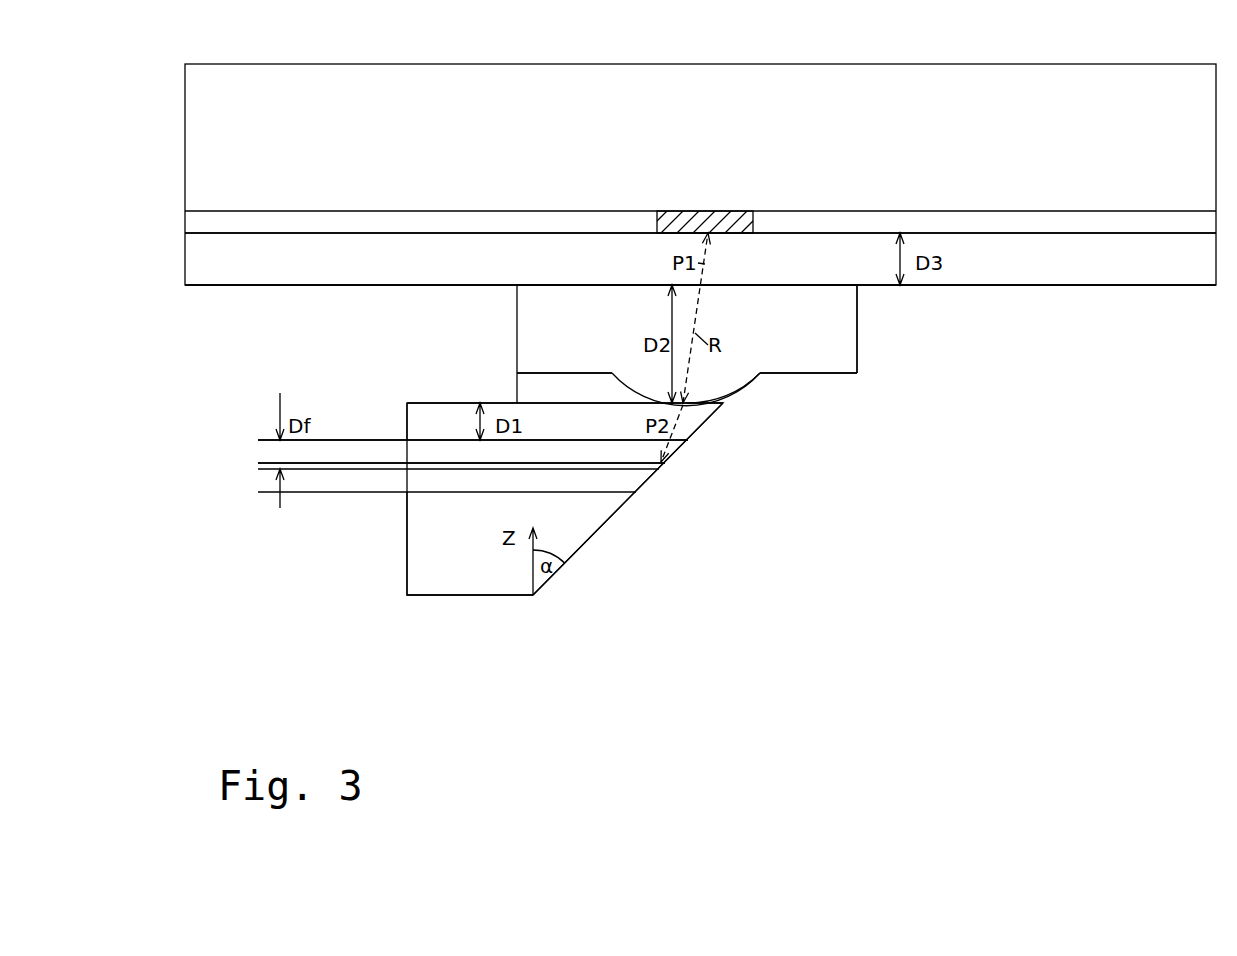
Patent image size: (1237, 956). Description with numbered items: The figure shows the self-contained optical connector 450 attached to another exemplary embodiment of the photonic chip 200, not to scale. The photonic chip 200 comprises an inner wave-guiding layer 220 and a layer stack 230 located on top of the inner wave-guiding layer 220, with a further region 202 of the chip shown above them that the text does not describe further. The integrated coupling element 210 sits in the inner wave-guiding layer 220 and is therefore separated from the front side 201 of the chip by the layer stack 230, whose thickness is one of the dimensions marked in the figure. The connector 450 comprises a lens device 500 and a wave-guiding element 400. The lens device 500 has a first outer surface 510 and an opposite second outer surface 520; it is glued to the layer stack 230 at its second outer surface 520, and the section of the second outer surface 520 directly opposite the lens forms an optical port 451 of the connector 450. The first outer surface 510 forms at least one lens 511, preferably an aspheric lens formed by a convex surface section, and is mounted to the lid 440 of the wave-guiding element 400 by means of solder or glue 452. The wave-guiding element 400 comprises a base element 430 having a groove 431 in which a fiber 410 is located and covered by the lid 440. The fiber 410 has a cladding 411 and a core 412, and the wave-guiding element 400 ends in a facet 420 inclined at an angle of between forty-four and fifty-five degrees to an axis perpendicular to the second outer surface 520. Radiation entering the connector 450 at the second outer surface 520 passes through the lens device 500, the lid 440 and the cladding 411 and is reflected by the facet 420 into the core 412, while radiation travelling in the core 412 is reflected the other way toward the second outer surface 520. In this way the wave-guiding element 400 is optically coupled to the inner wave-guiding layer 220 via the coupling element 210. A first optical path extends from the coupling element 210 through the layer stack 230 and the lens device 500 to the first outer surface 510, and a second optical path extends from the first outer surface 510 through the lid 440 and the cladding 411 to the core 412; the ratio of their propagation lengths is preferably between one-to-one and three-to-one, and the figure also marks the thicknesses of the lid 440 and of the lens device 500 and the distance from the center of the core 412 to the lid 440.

The photonic chip 200 is at (1143, 268).
The front side 201 is at (1055, 287).
The upper layer of substrate 202 is at (828, 62).
The coupling element 210 is at (738, 220).
The inner wave-guiding layer 220 is at (398, 225).
The layer stack 230 is at (290, 268).
The wave-guiding element 400 is at (465, 582).
The fiber 410 is at (328, 485).
The cladding 411 is at (378, 448).
The core 412 is at (258, 466).
The facet 420 is at (607, 522).
The base element 430 is at (422, 558).
The groove 431 is at (502, 477).
The lid 440 is at (437, 412).
The self-contained optical connector 450 is at (696, 483).
The optical port 451 is at (702, 285).
The solder or glue 452 is at (532, 388).
The lens device 500 is at (848, 343).
The first outer surface 510 is at (805, 374).
The lens 511 is at (715, 393).
The second outer surface 520 is at (783, 285).